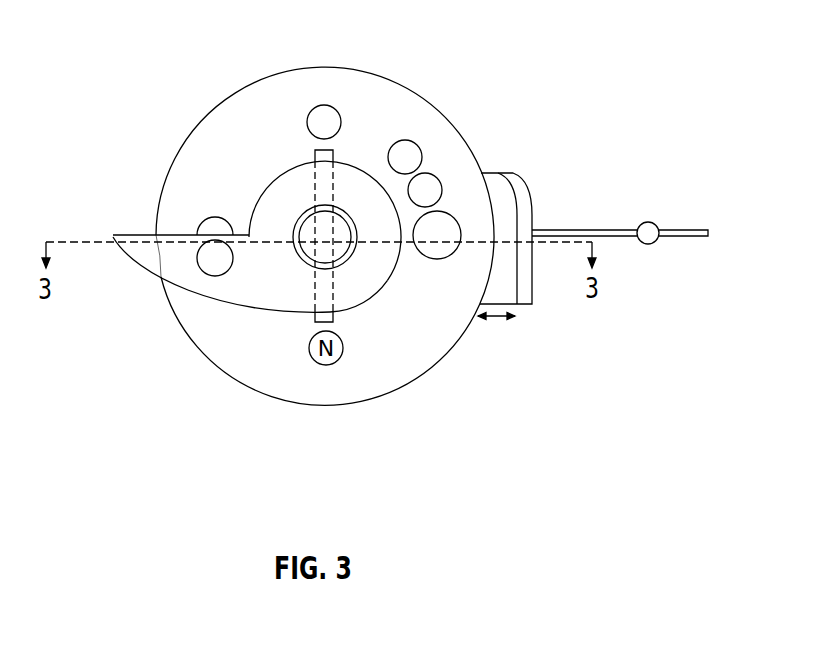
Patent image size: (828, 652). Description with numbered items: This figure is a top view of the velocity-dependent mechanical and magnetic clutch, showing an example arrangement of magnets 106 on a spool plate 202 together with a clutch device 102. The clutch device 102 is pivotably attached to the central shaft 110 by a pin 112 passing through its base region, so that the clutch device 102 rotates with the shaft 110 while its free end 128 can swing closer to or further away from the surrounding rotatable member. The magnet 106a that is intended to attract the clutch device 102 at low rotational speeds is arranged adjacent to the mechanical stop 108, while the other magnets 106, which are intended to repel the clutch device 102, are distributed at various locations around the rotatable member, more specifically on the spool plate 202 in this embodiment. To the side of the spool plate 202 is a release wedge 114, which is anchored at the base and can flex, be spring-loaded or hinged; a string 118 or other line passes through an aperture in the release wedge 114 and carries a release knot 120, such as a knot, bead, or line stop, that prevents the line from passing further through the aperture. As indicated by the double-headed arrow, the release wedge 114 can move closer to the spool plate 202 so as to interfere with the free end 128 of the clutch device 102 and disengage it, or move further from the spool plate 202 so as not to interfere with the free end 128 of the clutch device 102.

The clutch device 102 is at (153, 277).
The magnets 106 is at (330, 105).
The magnet 106a is at (425, 173).
The mechanical stop 108 is at (450, 214).
The shaft 110 is at (335, 250).
The pin 112 is at (316, 150).
The release wedge 114 is at (522, 304).
The string 118 is at (593, 230).
The release knot 120 is at (648, 223).
The free end 128 is at (157, 248).
The spool plate 202 is at (283, 403).